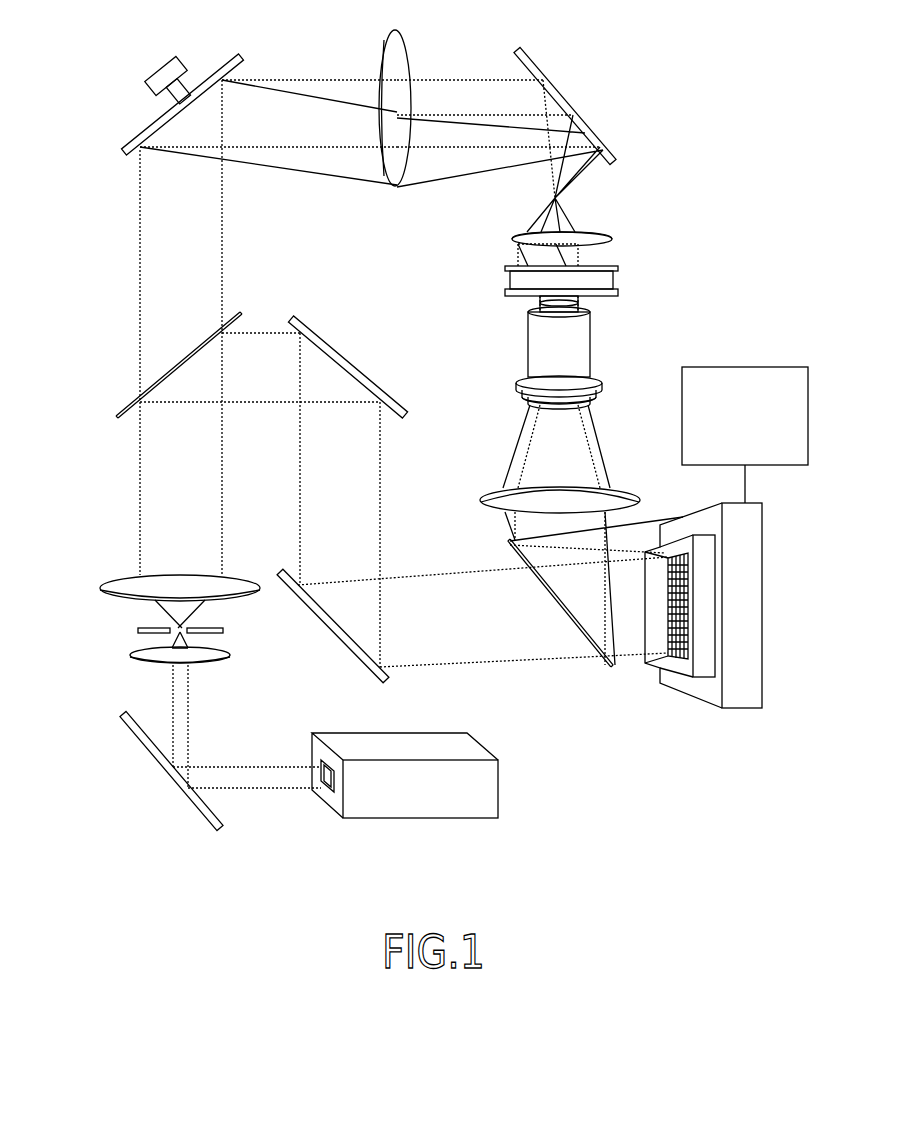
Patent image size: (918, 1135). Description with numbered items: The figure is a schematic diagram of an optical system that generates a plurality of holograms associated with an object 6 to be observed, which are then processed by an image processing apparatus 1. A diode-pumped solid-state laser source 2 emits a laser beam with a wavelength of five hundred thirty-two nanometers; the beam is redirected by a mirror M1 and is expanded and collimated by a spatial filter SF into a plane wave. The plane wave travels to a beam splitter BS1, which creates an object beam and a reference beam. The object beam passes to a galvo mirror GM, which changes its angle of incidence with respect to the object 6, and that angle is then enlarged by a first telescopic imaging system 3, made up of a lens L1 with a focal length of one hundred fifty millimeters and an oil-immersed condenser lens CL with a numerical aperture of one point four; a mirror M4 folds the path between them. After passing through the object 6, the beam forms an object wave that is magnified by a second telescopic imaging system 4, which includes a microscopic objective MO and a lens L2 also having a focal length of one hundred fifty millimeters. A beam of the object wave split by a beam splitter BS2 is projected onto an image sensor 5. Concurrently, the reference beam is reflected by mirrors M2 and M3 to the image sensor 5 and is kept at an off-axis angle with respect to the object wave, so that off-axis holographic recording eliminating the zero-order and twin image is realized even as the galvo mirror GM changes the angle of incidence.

The image processing apparatus 1 is at (748, 367).
The diode-pumped solid-state laser source 2 is at (495, 787).
The first telescopic imaging system 3 is at (458, 234).
The second telescopic imaging system 4 is at (445, 318).
The image sensor 5 is at (742, 708).
The object to be observed 6 is at (631, 284).
The galvo mirror GM is at (222, 72).
The mirror M1 is at (162, 767).
The mirror M2 is at (305, 322).
The mirror M3 is at (323, 625).
The mirror M4 is at (537, 55).
The lens L1 is at (392, 190).
The lens L2 is at (495, 497).
The oil-immersed condenser lens CL is at (520, 240).
The microscopic objective MO is at (530, 345).
The beam splitter BS1 is at (130, 398).
The beam splitter BS2 is at (600, 662).
The spatial filter SF is at (121, 645).